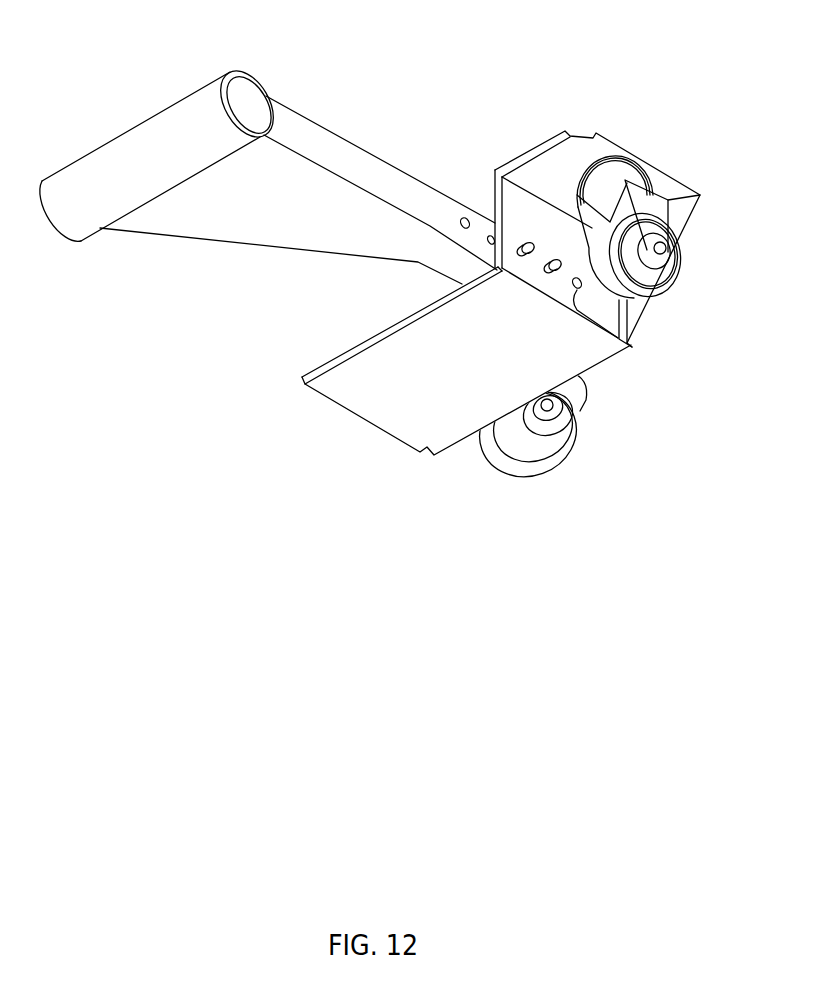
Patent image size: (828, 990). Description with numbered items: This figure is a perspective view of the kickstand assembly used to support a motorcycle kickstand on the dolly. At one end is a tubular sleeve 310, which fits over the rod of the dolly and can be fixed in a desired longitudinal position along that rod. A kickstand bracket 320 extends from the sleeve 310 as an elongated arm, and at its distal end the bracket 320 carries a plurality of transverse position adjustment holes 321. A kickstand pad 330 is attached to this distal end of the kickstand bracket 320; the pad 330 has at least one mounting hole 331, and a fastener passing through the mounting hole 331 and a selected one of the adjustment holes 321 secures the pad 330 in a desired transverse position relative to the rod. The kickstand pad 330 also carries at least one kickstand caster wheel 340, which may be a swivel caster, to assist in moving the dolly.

The sleeve 310 is at (167, 107).
The kickstand bracket 320 is at (340, 160).
The transverse position adjustment holes 321 is at (466, 217).
The kickstand pad 330 is at (613, 146).
The mounting hole 331 is at (617, 362).
The kickstand caster wheel 340 is at (551, 464).